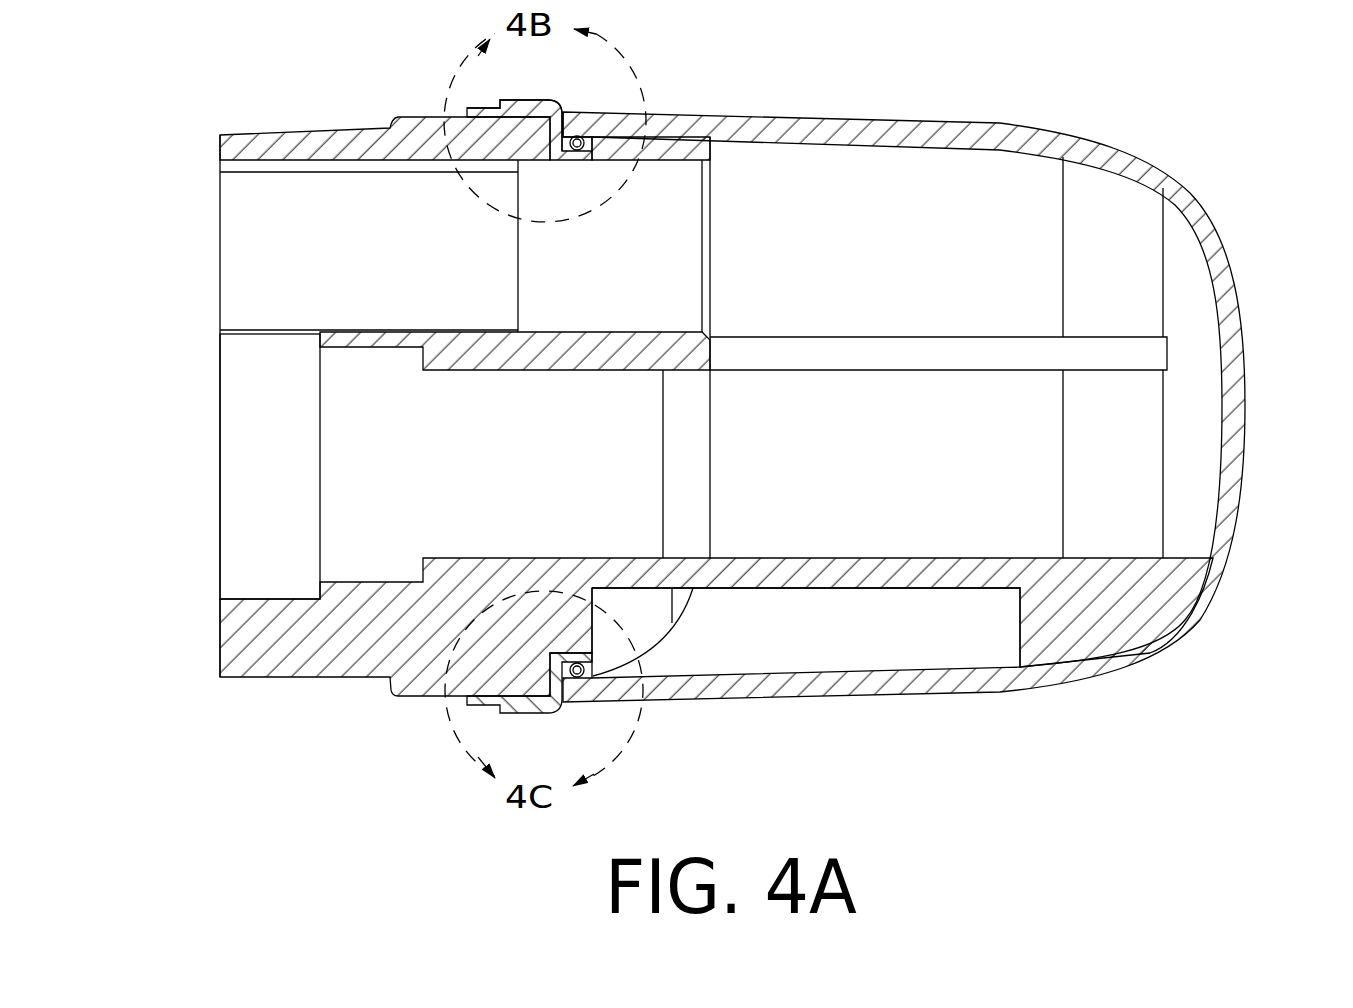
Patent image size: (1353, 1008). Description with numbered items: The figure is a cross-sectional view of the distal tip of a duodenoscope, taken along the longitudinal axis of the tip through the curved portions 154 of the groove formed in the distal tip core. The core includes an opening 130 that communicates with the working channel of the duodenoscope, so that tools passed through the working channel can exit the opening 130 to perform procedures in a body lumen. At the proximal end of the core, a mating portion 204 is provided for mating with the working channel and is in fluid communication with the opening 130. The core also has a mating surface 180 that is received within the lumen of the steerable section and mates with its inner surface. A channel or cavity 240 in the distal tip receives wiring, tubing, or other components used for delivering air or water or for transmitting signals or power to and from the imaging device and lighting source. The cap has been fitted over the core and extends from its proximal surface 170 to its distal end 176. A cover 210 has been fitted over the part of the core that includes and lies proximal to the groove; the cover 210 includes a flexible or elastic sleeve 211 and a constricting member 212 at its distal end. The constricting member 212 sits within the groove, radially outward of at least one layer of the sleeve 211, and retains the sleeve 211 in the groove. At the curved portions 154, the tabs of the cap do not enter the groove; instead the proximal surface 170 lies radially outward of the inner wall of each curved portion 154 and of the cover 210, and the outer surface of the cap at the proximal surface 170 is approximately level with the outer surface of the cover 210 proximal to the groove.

The opening 130 is at (600, 457).
The curved portions 154 is at (556, 160).
The proximal surface 170 is at (581, 143).
The distal end 176 is at (1245, 412).
The mating surface 180 is at (281, 677).
The mating portion 204 is at (260, 470).
The cover 210 is at (557, 94).
The sleeve 211 is at (517, 100).
The constricting member 212 is at (582, 150).
The channel or cavity 240 is at (288, 236).